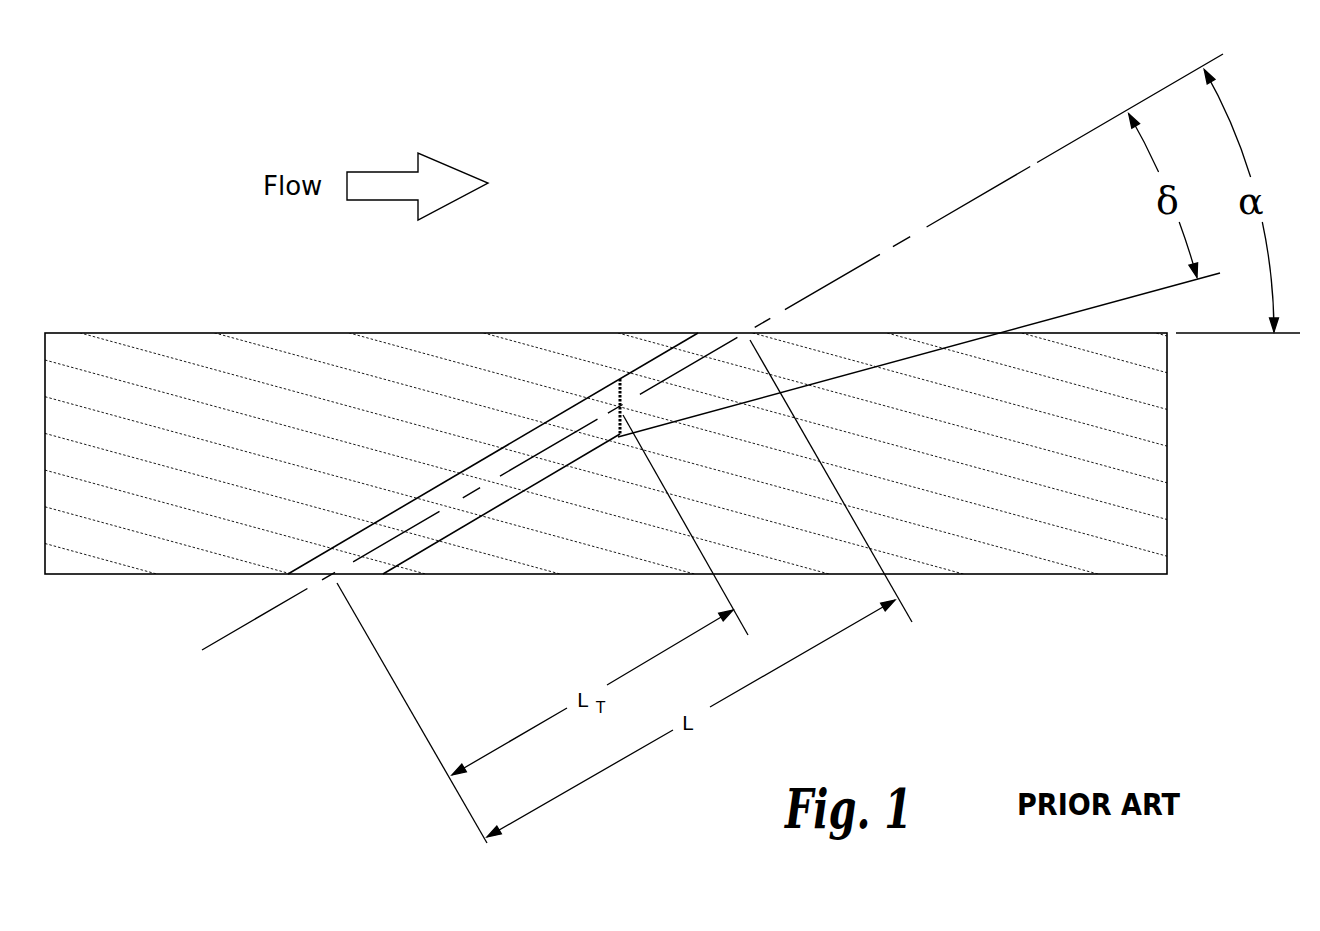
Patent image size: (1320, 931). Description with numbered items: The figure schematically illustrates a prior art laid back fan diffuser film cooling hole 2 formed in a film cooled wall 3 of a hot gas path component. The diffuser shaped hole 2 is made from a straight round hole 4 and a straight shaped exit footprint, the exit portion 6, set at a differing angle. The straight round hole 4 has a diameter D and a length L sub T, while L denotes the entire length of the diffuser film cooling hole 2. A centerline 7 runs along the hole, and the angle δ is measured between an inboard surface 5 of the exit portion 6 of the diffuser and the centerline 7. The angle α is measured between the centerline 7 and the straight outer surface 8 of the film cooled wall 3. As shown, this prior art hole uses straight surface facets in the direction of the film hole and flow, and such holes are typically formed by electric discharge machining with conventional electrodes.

The diffuser shaped hole 2 is at (512, 442).
The film cooled wall 3 is at (222, 350).
The straight round hole 4 is at (453, 520).
The inboard surface 5 is at (750, 392).
The exit portion 6 is at (783, 358).
The centerline 7 is at (1000, 183).
The straight outer surface 8 is at (1130, 297).